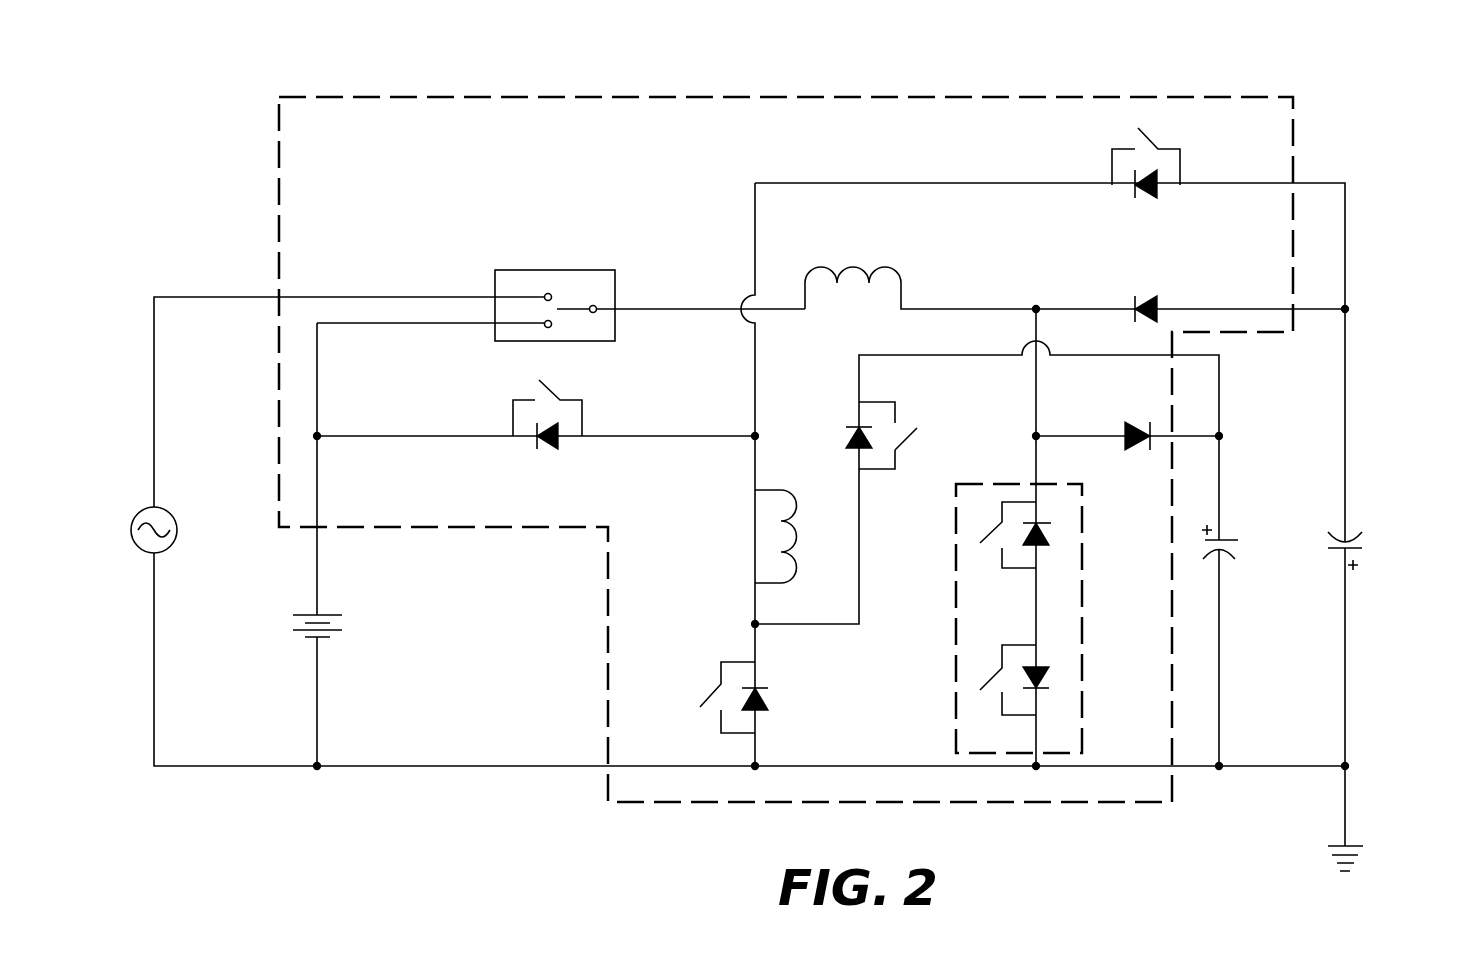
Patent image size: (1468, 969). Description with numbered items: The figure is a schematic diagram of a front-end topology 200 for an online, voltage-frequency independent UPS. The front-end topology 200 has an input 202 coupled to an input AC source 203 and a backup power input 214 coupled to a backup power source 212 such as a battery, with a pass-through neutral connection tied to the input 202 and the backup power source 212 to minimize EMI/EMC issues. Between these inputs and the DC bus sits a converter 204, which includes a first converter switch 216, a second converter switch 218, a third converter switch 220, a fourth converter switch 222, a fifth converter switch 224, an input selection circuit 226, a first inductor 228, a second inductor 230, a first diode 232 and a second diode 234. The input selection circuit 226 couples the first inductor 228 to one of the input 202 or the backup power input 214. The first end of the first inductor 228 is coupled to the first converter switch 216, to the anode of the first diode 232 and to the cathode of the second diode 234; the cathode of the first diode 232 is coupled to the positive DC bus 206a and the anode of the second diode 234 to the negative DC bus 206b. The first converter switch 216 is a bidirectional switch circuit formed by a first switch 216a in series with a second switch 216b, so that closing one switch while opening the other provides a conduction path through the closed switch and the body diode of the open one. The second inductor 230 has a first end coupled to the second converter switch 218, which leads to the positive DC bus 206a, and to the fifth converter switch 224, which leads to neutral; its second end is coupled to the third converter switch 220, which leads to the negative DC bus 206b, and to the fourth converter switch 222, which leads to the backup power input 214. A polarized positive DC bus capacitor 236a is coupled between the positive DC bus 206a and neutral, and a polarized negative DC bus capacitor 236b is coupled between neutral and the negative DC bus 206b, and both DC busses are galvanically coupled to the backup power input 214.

The front-end topology 200 is at (225, 123).
The input 202 is at (272, 296).
The input AC source 203 is at (168, 510).
The converter 204 is at (622, 95).
The positive DC bus 206a is at (1219, 436).
The negative DC bus 206b is at (1345, 309).
The backup power source 212 is at (342, 630).
The backup power input 214 is at (317, 605).
The first converter switch 216 is at (956, 618).
The first switch 216a is at (979, 543).
The second switch 216b is at (980, 690).
The second converter switch 218 is at (895, 422).
The third converter switch 220 is at (1182, 160).
The fourth converter switch 222 is at (582, 408).
The fifth converter switch 224 is at (721, 663).
The input selection circuit 226 is at (553, 270).
The first inductor 228 is at (868, 265).
The second inductor 230 is at (793, 532).
The first diode 232 is at (1125, 425).
The second diode 234 is at (1157, 298).
The positive DC bus capacitor 236a is at (1228, 537).
The negative DC bus capacitor 236b is at (1355, 537).